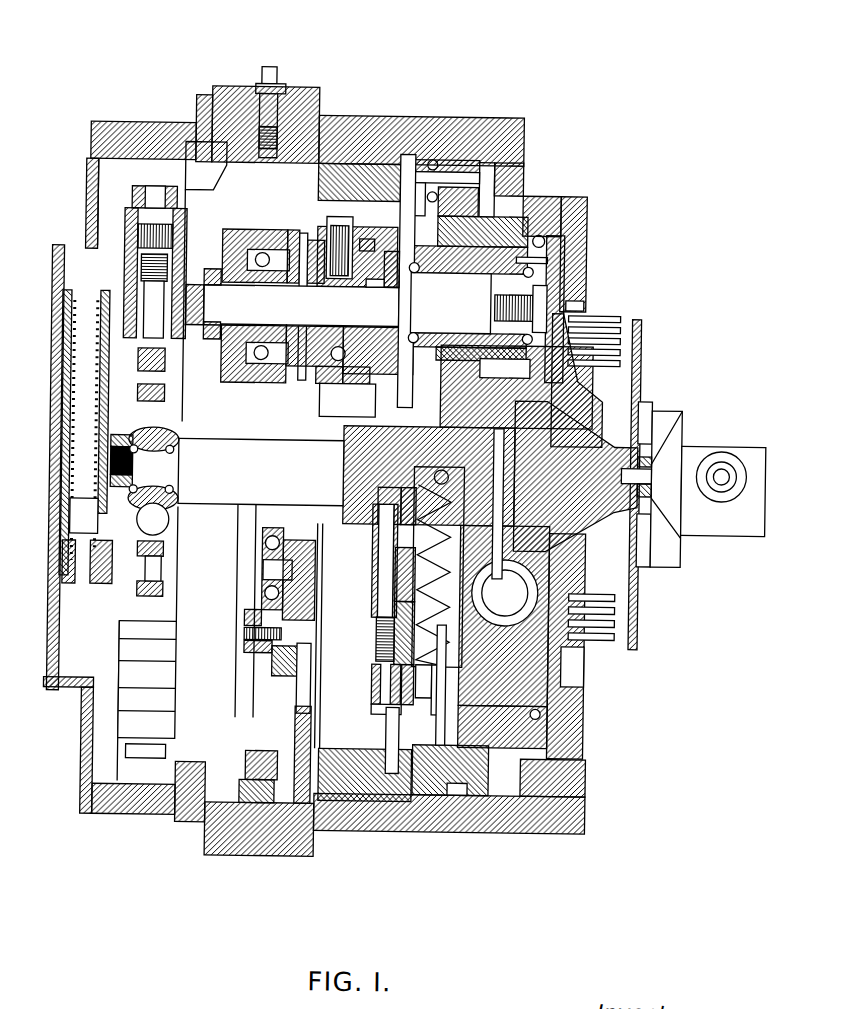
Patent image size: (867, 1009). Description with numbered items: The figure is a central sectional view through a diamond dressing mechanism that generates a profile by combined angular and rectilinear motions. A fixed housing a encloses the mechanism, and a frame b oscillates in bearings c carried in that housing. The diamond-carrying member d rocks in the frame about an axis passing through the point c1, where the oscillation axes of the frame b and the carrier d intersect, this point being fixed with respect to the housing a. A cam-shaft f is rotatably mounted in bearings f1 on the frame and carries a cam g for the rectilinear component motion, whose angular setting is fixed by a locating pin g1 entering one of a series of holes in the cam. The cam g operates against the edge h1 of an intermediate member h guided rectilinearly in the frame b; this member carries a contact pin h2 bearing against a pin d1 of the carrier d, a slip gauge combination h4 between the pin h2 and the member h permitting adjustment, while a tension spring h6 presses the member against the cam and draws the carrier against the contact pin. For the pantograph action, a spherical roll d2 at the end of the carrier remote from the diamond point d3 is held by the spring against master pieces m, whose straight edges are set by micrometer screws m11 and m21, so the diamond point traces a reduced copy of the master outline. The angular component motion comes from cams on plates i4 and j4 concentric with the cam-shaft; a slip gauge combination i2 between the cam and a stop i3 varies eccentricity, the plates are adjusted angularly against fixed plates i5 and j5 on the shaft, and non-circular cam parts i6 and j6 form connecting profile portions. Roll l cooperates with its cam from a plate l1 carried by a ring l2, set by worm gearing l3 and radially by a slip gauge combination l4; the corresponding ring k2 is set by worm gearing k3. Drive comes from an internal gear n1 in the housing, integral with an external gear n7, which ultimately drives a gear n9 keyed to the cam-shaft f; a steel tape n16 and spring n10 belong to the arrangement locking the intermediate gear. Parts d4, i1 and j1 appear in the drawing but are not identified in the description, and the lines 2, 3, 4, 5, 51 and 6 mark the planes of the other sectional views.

The fixed housing a is at (440, 120).
The frame b is at (585, 378).
The bearings c is at (583, 237).
The point of intersection of oscillation axes c1 is at (494, 470).
The diamond-carrying member d is at (261, 471).
The pin d1 is at (345, 480).
The spherical roll d2 is at (150, 508).
The diamond point d3 is at (720, 480).
The cone d4 is at (668, 424).
The cam-shaft f is at (450, 303).
The bearings f1 is at (411, 330).
The cam g is at (387, 287).
The locating pin g1 is at (380, 290).
The intermediate member h is at (378, 567).
The edge h1 is at (372, 410).
The contact pin h2 is at (395, 600).
The slip gauge combination h4 is at (380, 655).
The tension spring h6 is at (385, 628).
The shaft i1 is at (320, 345).
The slip gauge combination i2 is at (300, 232).
The stop i3 is at (332, 228).
The cam-carrying plate i4 is at (362, 245).
The fixed plate i5 is at (340, 415).
The non-circular cam part i6 is at (318, 382).
The gear j1 is at (245, 380).
The cam-carrying plate j4 is at (222, 240).
The fixed plate j5 is at (222, 345).
The non-circular cam part j6 is at (278, 382).
The ring k2 is at (345, 770).
The worm and worm gear combination k3 is at (372, 800).
The roll l is at (262, 545).
The plate l1 is at (270, 653).
The ring l2 is at (297, 800).
The worm and worm gear combination l3 is at (297, 800).
The slip gauge combination l4 is at (285, 715).
The master pieces m is at (163, 393).
The micrometer screw m11 is at (138, 680).
The micrometer screw m21 is at (130, 330).
The internal gear n1 is at (415, 790).
The external gear n7 is at (460, 790).
The gear n9 is at (430, 395).
The spring n10 is at (582, 647).
The steel tape n16 is at (572, 322).
The section line 2 is at (790, 468).
The section line 3 is at (107, 855).
The section line 4 is at (383, 900).
The section line 5 is at (335, 900).
The section line 51 is at (243, 915).
The section line 6 is at (545, 815).